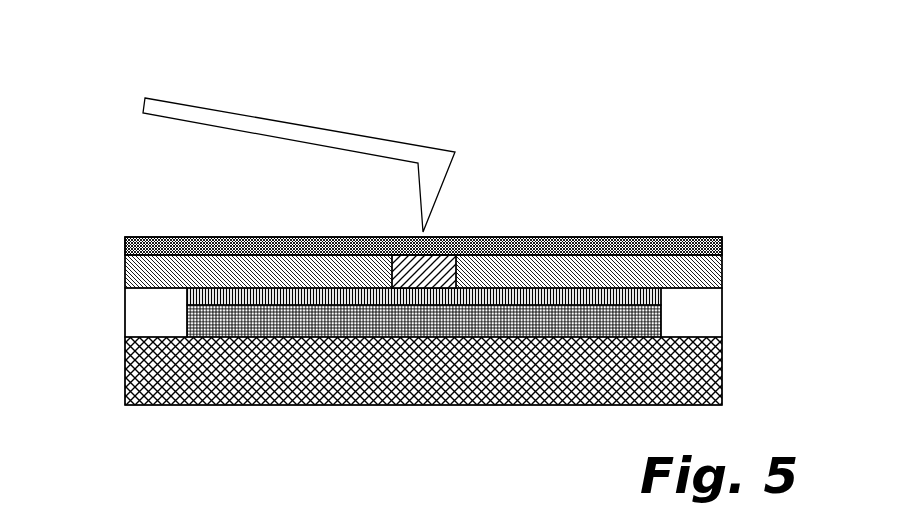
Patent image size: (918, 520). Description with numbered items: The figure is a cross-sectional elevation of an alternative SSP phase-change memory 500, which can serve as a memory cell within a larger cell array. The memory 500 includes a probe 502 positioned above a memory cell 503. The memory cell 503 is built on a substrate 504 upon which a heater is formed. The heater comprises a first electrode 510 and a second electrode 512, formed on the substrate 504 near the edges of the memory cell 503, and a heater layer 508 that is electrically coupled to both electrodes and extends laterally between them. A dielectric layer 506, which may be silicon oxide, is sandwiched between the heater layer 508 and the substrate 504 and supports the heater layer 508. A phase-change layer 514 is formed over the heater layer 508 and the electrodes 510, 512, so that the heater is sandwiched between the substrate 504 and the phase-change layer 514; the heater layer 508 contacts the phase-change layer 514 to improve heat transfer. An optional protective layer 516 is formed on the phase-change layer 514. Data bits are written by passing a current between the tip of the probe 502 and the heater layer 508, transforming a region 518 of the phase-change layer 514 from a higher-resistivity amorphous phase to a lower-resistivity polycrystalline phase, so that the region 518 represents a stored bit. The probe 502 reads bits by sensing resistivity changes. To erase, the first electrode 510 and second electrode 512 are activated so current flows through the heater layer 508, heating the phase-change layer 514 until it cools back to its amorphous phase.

The SSP phase-change memory 500 is at (522, 86).
The probe 502 is at (317, 133).
The memory cell 503 is at (235, 235).
The substrate 504 is at (722, 395).
The dielectric layer 506 is at (228, 323).
The heater layer 508 is at (525, 298).
The first electrode 510 is at (722, 310).
The second electrode 512 is at (130, 330).
The phase-change layer 514 is at (130, 273).
The protective layer 516 is at (630, 247).
The region 518 is at (453, 254).